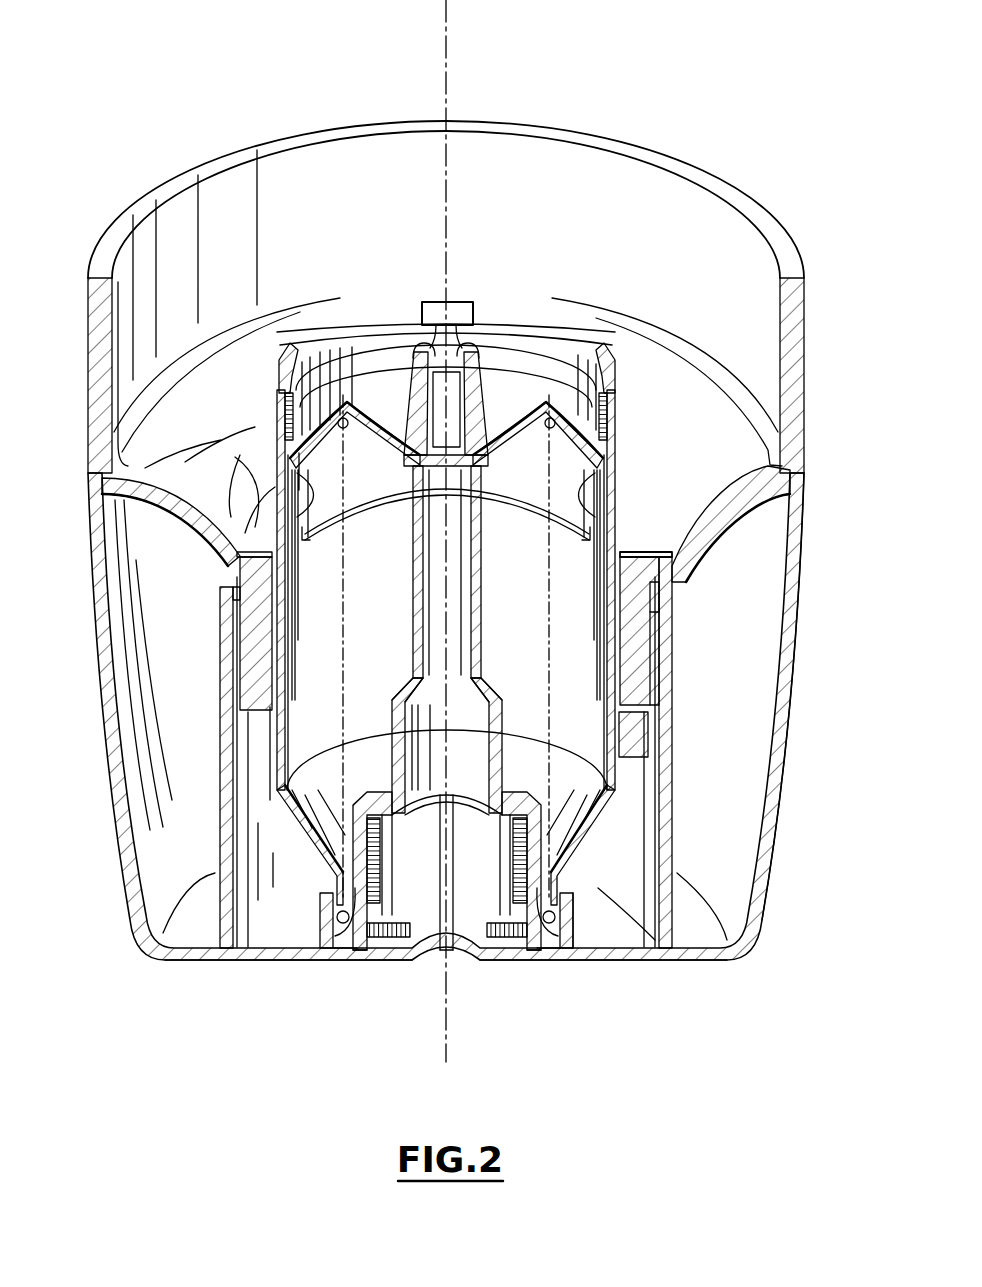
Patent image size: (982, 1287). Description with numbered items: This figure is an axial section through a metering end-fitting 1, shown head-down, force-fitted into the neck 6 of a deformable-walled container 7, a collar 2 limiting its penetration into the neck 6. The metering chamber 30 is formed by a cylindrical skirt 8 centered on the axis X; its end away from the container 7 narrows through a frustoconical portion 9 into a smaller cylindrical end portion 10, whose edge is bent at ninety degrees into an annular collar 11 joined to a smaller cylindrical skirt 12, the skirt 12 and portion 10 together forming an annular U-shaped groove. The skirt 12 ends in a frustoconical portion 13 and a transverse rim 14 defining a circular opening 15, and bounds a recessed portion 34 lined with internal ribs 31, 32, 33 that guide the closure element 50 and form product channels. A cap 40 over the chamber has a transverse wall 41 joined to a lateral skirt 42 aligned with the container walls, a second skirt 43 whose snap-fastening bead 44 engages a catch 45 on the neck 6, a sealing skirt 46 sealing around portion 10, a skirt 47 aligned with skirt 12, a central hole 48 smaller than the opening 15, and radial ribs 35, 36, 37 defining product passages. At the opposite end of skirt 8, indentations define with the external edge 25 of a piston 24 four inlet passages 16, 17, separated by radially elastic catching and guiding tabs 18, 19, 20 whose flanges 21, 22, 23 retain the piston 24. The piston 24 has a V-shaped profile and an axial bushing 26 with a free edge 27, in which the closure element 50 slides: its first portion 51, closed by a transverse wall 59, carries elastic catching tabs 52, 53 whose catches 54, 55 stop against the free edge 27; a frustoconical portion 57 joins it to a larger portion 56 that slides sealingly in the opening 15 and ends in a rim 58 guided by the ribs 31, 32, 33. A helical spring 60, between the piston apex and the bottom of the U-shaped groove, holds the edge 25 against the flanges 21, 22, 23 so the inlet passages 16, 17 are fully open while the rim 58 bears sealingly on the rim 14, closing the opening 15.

The axis X is at (446, 80).
The metering end-fitting 1 is at (94, 794).
The collar 2 is at (632, 722).
The neck 6 is at (635, 681).
The container 7 is at (748, 506).
The cylindrical skirt 8 is at (620, 755).
The frustoconical portion 9 is at (597, 840).
The cylindrical end portion 10 is at (575, 942).
The annular collar 11 is at (532, 945).
The cylindrical skirt 12 is at (598, 885).
The frustoconical portion 13 is at (538, 808).
The transverse rim 14 is at (510, 800).
The opening 15 is at (372, 805).
The inlet passage 16 is at (275, 515).
The inlet passage 17 is at (590, 488).
The catching and guiding tab 18 is at (276, 425).
The catching and guiding tab 19 is at (477, 322).
The catching and guiding tab 20 is at (628, 410).
The flange 21 is at (305, 343).
The flange 22 is at (437, 300).
The flange 23 is at (612, 358).
The piston 24 is at (490, 395).
The external edge 25 is at (527, 395).
The axial bushing 26 is at (568, 420).
The free edge 27 is at (375, 400).
The metering chamber 30 is at (643, 650).
The internal rib 31 is at (390, 940).
The internal rib 32 is at (425, 880).
The internal rib 33 is at (502, 878).
The recessed portion 34 is at (433, 945).
The radial rib 35 is at (378, 950).
The radial rib 36 is at (453, 948).
The radial rib 37 is at (515, 945).
The cap 40 is at (92, 643).
The transverse wall 41 is at (245, 963).
The lateral skirt 42 is at (808, 515).
The second skirt 43 is at (672, 907).
The snap-fastening bead 44 is at (673, 602).
The catch 45 is at (657, 630).
The sealing skirt 46 is at (567, 945).
The skirt 47 is at (349, 924).
The hole 48 is at (462, 947).
The closure element 50 is at (412, 580).
The first portion 51 is at (485, 588).
The catching tab 52 is at (468, 300).
The catching tab 53 is at (413, 352).
The catch 54 is at (484, 364).
The catch 55 is at (403, 388).
The portion 56 is at (367, 700).
The frustoconical portion 57 is at (604, 610).
The rim 58 is at (488, 805).
The transverse wall 59 is at (432, 507).
The helical spring 60 is at (345, 630).